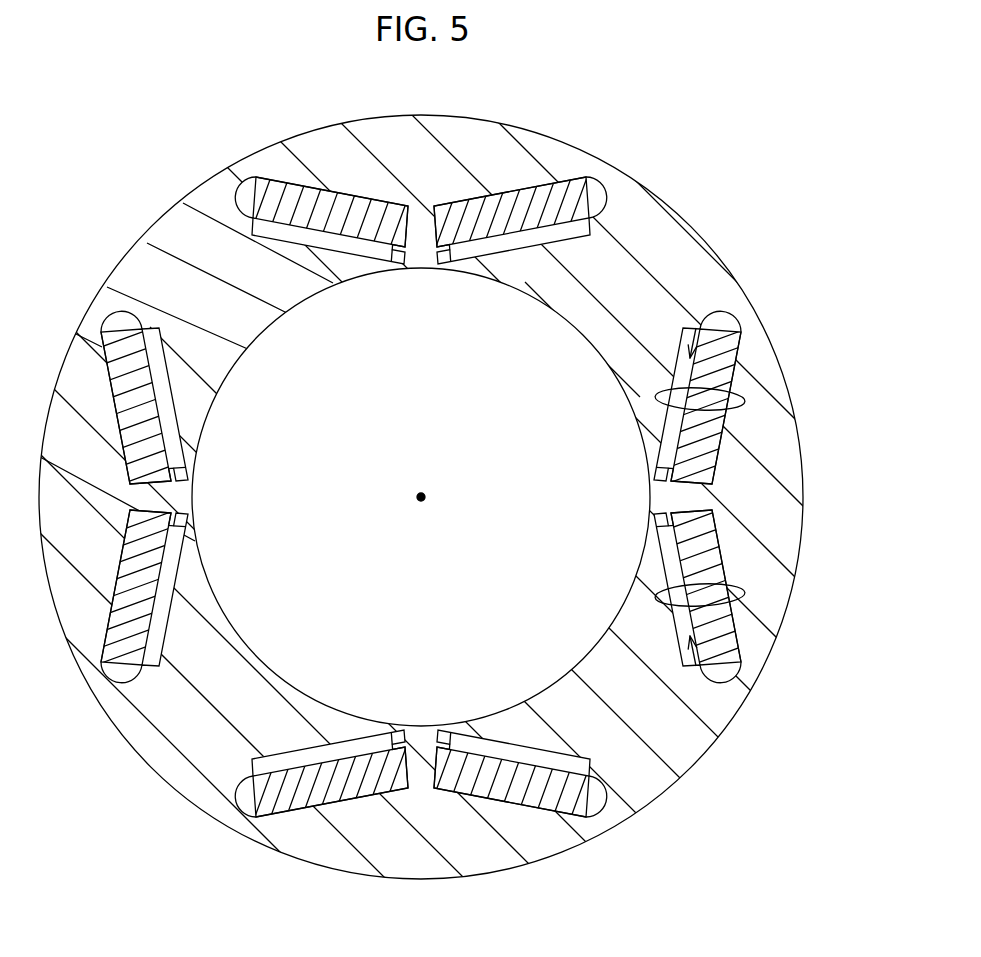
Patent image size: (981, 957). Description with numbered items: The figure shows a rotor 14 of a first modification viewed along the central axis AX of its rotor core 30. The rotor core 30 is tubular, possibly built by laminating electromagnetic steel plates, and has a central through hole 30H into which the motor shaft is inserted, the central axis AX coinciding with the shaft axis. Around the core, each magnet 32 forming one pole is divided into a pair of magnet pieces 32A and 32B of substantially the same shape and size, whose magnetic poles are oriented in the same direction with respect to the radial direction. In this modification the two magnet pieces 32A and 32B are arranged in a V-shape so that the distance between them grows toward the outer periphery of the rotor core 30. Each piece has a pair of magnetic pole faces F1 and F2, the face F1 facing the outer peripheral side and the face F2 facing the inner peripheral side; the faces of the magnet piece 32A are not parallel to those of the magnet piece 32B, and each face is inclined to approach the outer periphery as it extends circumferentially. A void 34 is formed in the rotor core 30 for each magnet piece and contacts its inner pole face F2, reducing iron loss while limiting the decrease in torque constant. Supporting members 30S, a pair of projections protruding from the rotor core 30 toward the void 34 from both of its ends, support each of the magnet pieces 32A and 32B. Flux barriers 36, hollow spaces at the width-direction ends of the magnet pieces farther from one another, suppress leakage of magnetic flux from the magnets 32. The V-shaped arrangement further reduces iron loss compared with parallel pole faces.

The rotor 14 is at (106, 137).
The rotor core 30 is at (574, 850).
The through hole 30H is at (290, 636).
The supporting members 30S is at (695, 347).
The magnet 32 is at (423, 192).
The magnet piece 32A is at (340, 200).
The magnet piece 32B is at (505, 200).
The void 34 is at (696, 328).
The flux barrier 36 is at (727, 322).
The central axis AX is at (416, 498).
The magnetic pole face F1 is at (690, 404).
The magnetic pole face F2 is at (735, 390).